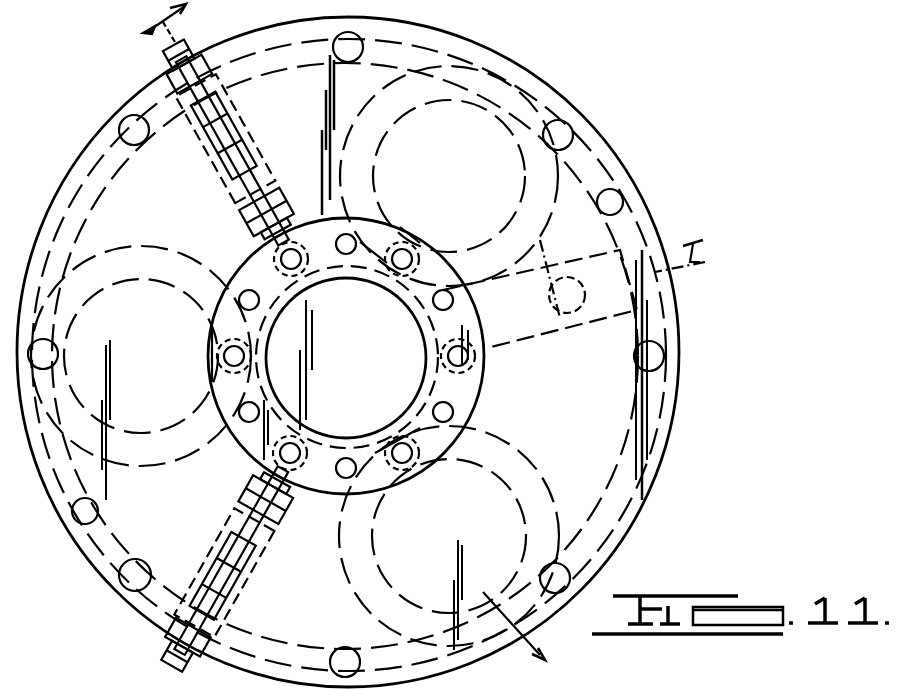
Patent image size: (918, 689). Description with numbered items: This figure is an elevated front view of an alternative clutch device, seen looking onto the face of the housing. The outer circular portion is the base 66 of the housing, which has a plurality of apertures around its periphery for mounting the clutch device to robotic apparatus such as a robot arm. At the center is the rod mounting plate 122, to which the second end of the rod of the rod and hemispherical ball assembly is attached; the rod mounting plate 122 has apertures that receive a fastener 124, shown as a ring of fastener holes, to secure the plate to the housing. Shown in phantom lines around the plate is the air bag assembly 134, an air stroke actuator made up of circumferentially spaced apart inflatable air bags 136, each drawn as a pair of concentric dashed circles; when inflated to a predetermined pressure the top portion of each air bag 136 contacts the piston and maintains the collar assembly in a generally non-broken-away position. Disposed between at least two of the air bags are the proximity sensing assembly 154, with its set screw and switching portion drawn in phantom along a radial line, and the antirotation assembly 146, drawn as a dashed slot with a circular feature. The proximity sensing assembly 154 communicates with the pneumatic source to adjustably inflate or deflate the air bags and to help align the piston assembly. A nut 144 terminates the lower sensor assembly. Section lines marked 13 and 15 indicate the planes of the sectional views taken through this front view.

The section line 13- 13 is at (341, 346).
The section line 15- 15 is at (564, 300).
The base 66 is at (598, 460).
The rod mounting plate 122 is at (365, 388).
The fastener 124 is at (409, 470).
The air bag assembly 134 is at (352, 607).
The inflatable air bag 136 is at (490, 527).
The nut 144 is at (158, 627).
The antirotation assembly 146 is at (603, 318).
The proximity sensing assembly 154 is at (205, 164).